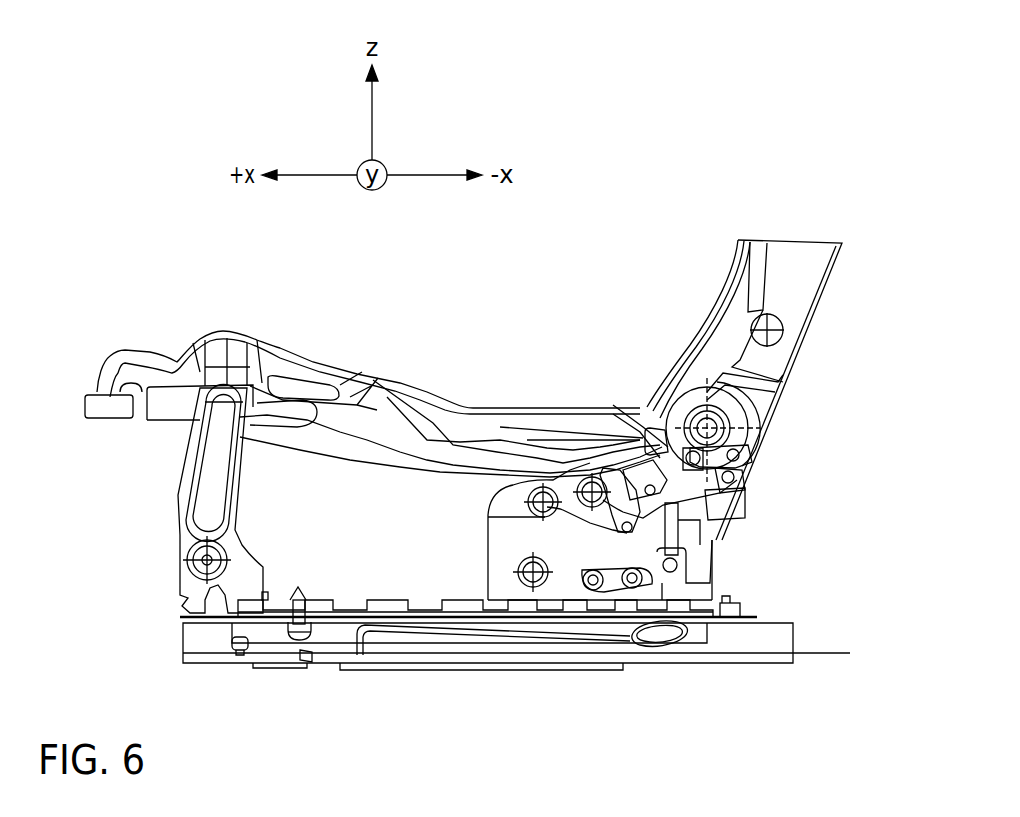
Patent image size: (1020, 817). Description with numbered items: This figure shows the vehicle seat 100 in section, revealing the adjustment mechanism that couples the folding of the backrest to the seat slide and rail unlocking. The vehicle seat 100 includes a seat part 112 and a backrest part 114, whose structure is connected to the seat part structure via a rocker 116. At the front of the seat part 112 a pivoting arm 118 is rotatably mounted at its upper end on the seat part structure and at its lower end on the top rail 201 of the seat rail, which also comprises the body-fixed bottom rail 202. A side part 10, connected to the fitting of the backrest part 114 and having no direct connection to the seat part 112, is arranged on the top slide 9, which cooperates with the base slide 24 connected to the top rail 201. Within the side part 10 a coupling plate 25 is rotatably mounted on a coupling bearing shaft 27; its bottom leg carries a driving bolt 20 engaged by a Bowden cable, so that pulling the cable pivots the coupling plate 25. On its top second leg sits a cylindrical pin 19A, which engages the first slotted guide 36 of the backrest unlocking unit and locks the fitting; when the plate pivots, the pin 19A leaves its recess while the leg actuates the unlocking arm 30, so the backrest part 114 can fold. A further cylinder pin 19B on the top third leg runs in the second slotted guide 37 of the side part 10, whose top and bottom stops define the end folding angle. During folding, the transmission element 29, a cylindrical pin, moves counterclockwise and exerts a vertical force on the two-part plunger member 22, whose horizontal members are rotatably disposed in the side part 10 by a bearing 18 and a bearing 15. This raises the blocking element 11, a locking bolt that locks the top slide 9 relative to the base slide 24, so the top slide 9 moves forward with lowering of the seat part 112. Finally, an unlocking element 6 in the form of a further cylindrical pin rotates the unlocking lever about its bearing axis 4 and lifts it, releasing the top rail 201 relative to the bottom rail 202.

The vehicle seat 100 is at (640, 132).
The backrest part 114 is at (793, 268).
The seat part 112 is at (275, 375).
The rocker 116 is at (337, 442).
The pivoting arm 118 is at (213, 485).
The side part 10 is at (495, 548).
The driving bolt 20 is at (562, 462).
The coupling plate 25 is at (640, 513).
The coupling bearing shaft 27 is at (650, 492).
The transmission element 29 is at (657, 440).
The cylindrical pin 19A is at (693, 457).
The unlocking arm 30 is at (696, 433).
The first slotted guide 36 is at (735, 453).
The cylinder pin 19B is at (728, 477).
The second slotted guide 37 is at (725, 507).
The plunger member 22 is at (672, 523).
The bearing 18 is at (670, 565).
The blocking element 11 is at (590, 583).
The bearing 15 is at (637, 583).
The top slide 9 is at (505, 607).
The top rail 201 is at (338, 630).
The bottom rail 202 is at (777, 653).
The bearing axis 4 is at (298, 602).
The unlocking element 6 is at (305, 657).
The base slide 24 is at (728, 610).